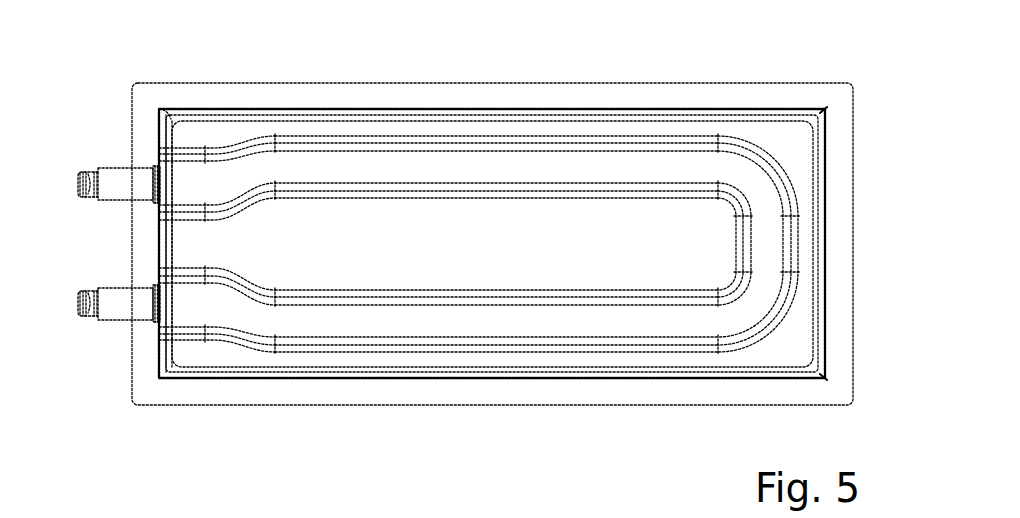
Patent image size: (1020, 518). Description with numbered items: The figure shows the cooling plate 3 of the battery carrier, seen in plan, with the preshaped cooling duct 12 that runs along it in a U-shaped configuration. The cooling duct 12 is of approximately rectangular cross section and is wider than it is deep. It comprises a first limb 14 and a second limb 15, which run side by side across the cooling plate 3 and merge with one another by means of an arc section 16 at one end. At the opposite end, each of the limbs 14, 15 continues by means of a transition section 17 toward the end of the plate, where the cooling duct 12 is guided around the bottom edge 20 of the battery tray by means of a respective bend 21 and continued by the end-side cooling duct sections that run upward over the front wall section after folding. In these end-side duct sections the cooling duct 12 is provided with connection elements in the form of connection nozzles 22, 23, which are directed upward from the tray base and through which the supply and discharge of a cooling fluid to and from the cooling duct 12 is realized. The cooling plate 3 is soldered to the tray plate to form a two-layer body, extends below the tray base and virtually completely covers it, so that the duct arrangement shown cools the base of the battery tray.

The cooling plate 3 is at (568, 130).
The cooling duct 12 is at (385, 141).
The first limb 14 is at (465, 162).
The second limb 15 is at (537, 332).
The arc section 16 is at (768, 233).
The transition section 17 is at (232, 162).
The bottom edge 20 is at (163, 375).
The bend 21 is at (160, 166).
The connection nozzle 22 is at (113, 168).
The connection nozzle 23 is at (115, 318).